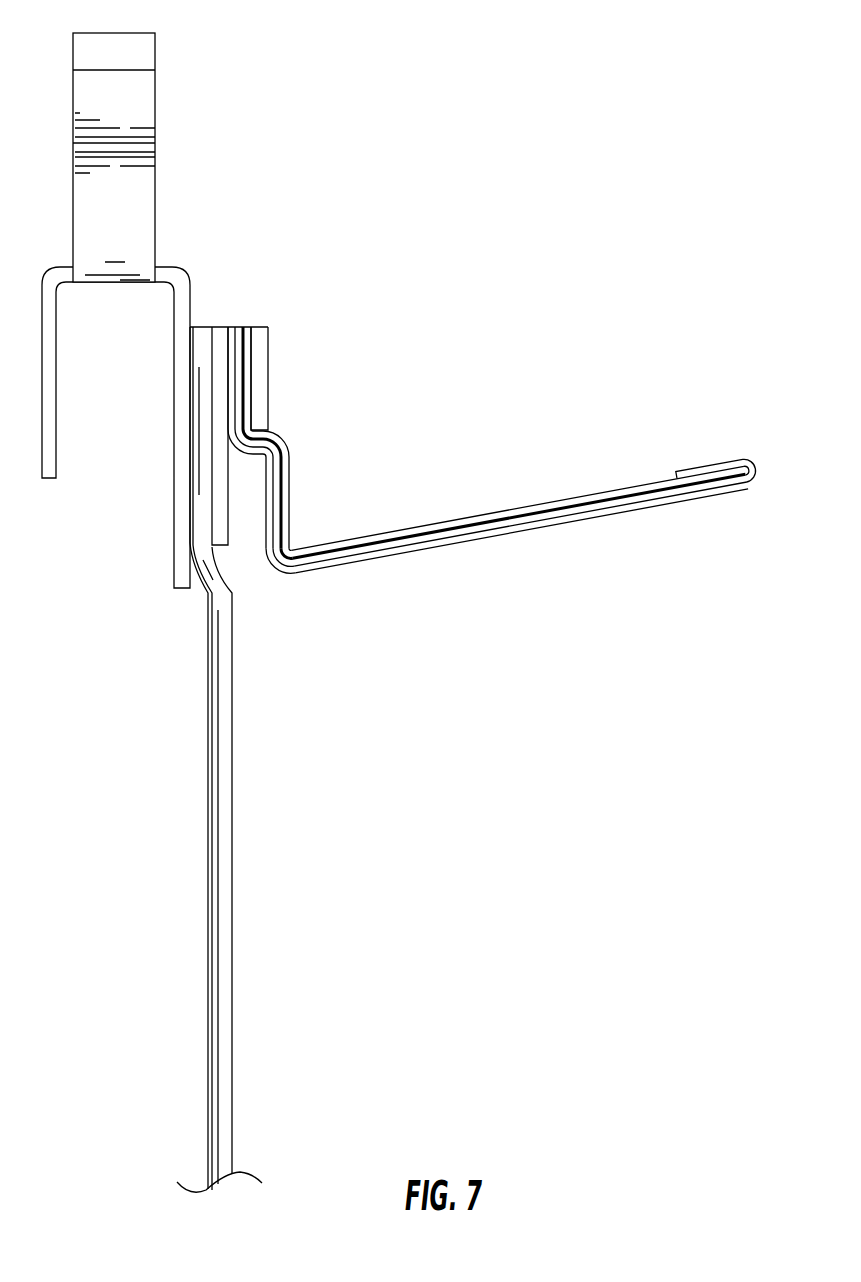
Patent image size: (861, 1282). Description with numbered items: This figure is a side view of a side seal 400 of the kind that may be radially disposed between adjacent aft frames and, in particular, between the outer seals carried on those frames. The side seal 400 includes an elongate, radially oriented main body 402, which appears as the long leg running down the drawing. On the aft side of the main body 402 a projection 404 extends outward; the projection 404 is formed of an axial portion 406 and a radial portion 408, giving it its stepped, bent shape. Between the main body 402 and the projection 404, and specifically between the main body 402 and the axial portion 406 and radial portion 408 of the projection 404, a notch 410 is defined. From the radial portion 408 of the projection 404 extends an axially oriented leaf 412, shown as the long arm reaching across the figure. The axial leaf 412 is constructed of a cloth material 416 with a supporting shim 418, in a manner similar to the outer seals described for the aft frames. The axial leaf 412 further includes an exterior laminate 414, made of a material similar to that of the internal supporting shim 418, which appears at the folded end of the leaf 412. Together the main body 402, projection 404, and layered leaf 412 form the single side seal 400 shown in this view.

The side seal 400 is at (602, 122).
The main body 402 is at (223, 868).
The projection 404 is at (312, 353).
The axial portion 406 is at (284, 445).
The radial portion 408 is at (290, 486).
The notch 410 is at (247, 517).
The leaf 412 is at (572, 497).
The exterior laminate 414 is at (753, 476).
The cloth material 416 is at (483, 518).
The supporting shim 418 is at (528, 515).